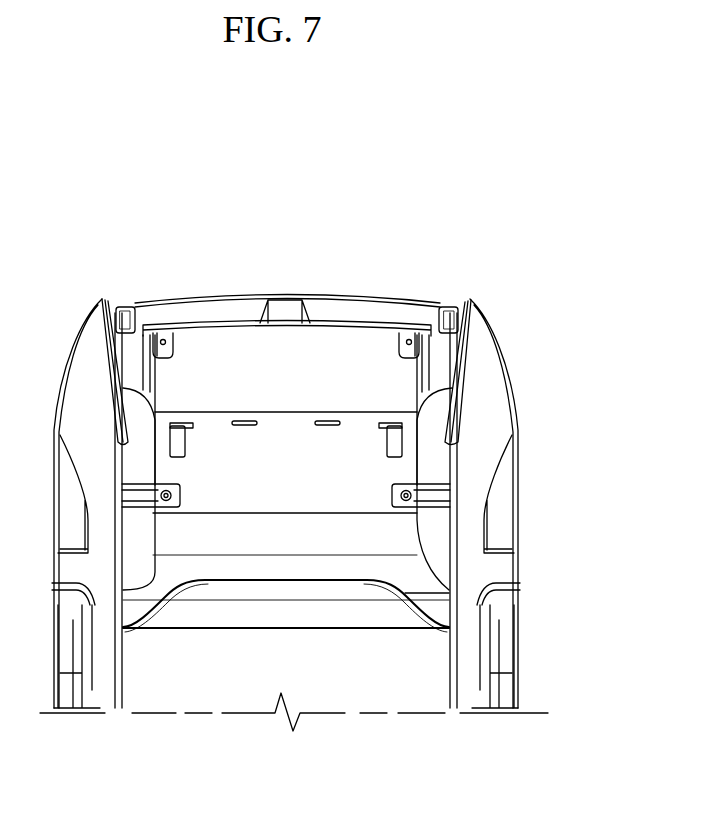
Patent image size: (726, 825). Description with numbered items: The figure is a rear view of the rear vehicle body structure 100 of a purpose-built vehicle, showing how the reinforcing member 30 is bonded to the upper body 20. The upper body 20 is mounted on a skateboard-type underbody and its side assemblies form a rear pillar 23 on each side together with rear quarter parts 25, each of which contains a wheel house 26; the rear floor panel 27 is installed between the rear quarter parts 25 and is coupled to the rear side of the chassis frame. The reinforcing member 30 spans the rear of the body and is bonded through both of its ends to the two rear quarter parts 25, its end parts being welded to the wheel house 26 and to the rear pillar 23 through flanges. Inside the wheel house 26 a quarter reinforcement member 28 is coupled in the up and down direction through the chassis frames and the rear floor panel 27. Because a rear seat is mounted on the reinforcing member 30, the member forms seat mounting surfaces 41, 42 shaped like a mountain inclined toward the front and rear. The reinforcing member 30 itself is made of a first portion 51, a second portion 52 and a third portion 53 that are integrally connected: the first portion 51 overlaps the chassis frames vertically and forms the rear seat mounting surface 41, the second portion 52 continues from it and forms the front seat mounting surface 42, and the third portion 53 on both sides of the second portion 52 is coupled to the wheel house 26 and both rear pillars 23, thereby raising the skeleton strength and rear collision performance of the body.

The rear vehicle body structure 100 is at (270, 181).
The upper body 20 is at (527, 483).
The rear pillar 23 is at (497, 568).
The rear quarter part 25 is at (520, 515).
The wheel house 26 is at (437, 563).
The rear floor panel 27 is at (363, 600).
The quarter reinforcement member 28 is at (427, 493).
The reinforcing member 30 is at (263, 583).
The seat mounting surface 41 is at (211, 538).
The seat mounting surface 42 is at (323, 567).
The first portion 51 is at (313, 537).
The second portion 52 is at (221, 567).
The third portion 53 is at (158, 606).